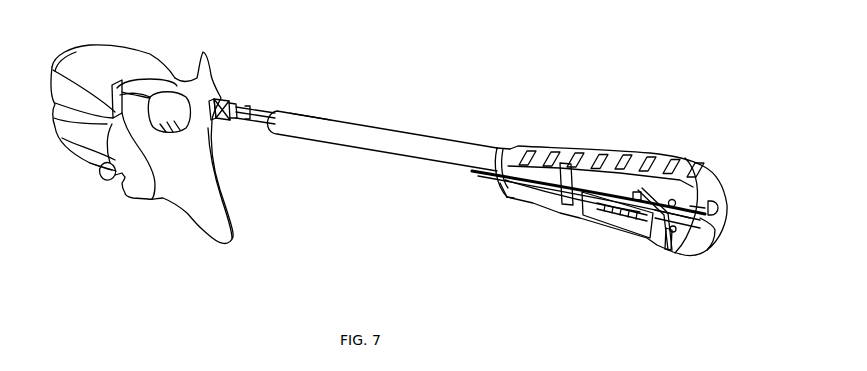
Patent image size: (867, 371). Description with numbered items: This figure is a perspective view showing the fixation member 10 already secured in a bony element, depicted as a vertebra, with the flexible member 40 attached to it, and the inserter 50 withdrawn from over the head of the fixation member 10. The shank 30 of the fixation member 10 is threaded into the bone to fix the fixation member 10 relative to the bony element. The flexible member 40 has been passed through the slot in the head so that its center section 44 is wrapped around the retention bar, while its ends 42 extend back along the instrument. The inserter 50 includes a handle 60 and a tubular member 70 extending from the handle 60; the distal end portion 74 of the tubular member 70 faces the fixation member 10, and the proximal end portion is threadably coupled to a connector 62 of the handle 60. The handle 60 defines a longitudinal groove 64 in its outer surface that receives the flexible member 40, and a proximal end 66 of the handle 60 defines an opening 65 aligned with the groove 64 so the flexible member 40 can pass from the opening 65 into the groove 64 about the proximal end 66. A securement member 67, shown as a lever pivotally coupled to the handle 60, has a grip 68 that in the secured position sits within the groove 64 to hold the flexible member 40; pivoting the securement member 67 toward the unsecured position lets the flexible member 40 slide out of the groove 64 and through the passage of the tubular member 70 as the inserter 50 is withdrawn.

The fixation member 10 is at (233, 82).
The shank 30 is at (209, 101).
The flexible member 40 is at (270, 88).
The center section 44 is at (243, 118).
The inserter 50 is at (463, 88).
The tubular member 70 is at (340, 128).
The distal end portion 74 is at (297, 120).
The handle 60 is at (640, 118).
The connector 62 is at (498, 151).
The ends 42 is at (532, 187).
The longitudinal groove 64 is at (635, 194).
The opening 65 is at (716, 206).
The proximal end 66 is at (702, 242).
The securement member 67 is at (654, 234).
The grip 68 is at (673, 250).